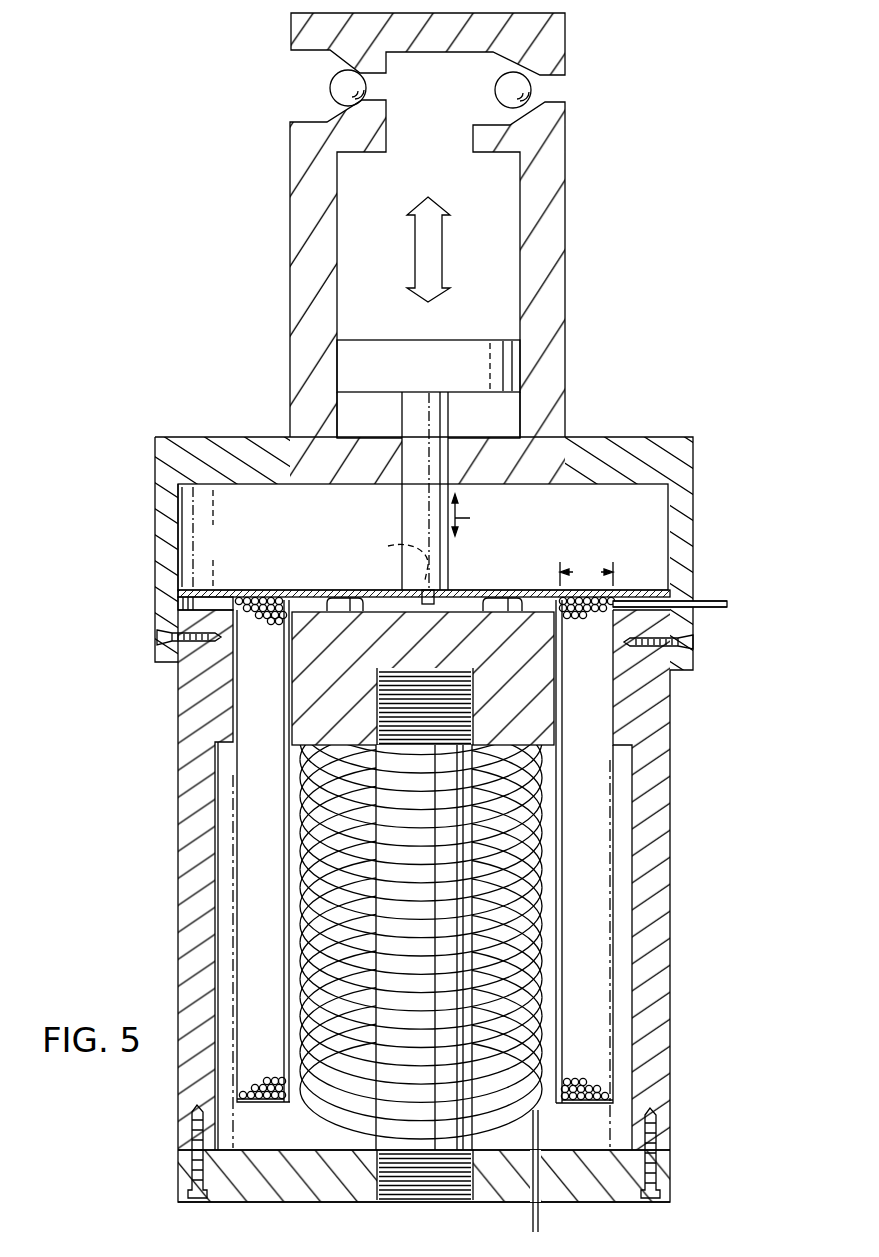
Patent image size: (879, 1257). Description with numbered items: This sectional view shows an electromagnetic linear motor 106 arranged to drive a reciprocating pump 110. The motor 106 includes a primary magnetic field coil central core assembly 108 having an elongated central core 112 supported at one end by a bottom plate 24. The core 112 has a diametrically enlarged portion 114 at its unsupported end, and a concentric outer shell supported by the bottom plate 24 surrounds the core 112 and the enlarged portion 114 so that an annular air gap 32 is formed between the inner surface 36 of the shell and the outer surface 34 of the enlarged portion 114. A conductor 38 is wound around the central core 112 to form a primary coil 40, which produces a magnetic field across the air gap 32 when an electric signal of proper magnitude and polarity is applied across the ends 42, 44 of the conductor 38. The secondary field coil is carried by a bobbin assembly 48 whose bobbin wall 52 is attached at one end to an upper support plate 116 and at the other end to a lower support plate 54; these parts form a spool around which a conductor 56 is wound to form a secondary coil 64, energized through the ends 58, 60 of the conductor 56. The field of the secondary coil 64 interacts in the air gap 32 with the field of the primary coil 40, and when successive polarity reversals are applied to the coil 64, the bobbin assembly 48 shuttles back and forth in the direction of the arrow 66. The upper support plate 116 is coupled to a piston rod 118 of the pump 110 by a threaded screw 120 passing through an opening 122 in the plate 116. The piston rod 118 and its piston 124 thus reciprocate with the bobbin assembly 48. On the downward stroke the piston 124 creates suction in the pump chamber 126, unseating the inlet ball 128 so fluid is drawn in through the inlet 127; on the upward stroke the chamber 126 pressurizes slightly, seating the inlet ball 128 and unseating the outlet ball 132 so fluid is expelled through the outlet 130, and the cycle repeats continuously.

The bottom plate 24 is at (307, 1202).
The annular air gap 32 is at (586, 570).
The outer surface 34 is at (554, 658).
The inner surface 36 is at (614, 718).
The conductor 38 is at (541, 1128).
The primary coil 40 is at (323, 1124).
The end of conductor 42 is at (531, 1216).
The end of conductor 44 is at (541, 1212).
The bobbin assembly 48 is at (630, 582).
The bobbin wall 52 is at (290, 840).
The lower support plate 54 is at (257, 1105).
The conductor 56 is at (703, 602).
The end of conductor 58 is at (728, 603).
The end of conductor 60 is at (710, 609).
The secondary coil 64 is at (263, 615).
The arrow 66 is at (482, 515).
The electromagnetic linear motor 106 is at (712, 786).
The primary magnetic field coil central core assembly 108 is at (531, 610).
The reciprocating pump 110 is at (628, 315).
The central core 112 is at (518, 746).
The diametrically enlarged portion 114 is at (317, 612).
The upper support plate 116 is at (210, 588).
The piston rod 118 is at (412, 521).
The threaded screw 120 is at (394, 562).
The opening 122 is at (436, 590).
The piston 124 is at (430, 338).
The pump chamber 126 is at (520, 220).
The inlet 127 is at (571, 102).
The inlet ball 128 is at (530, 96).
The outlet 130 is at (294, 71).
The outlet ball 132 is at (334, 99).